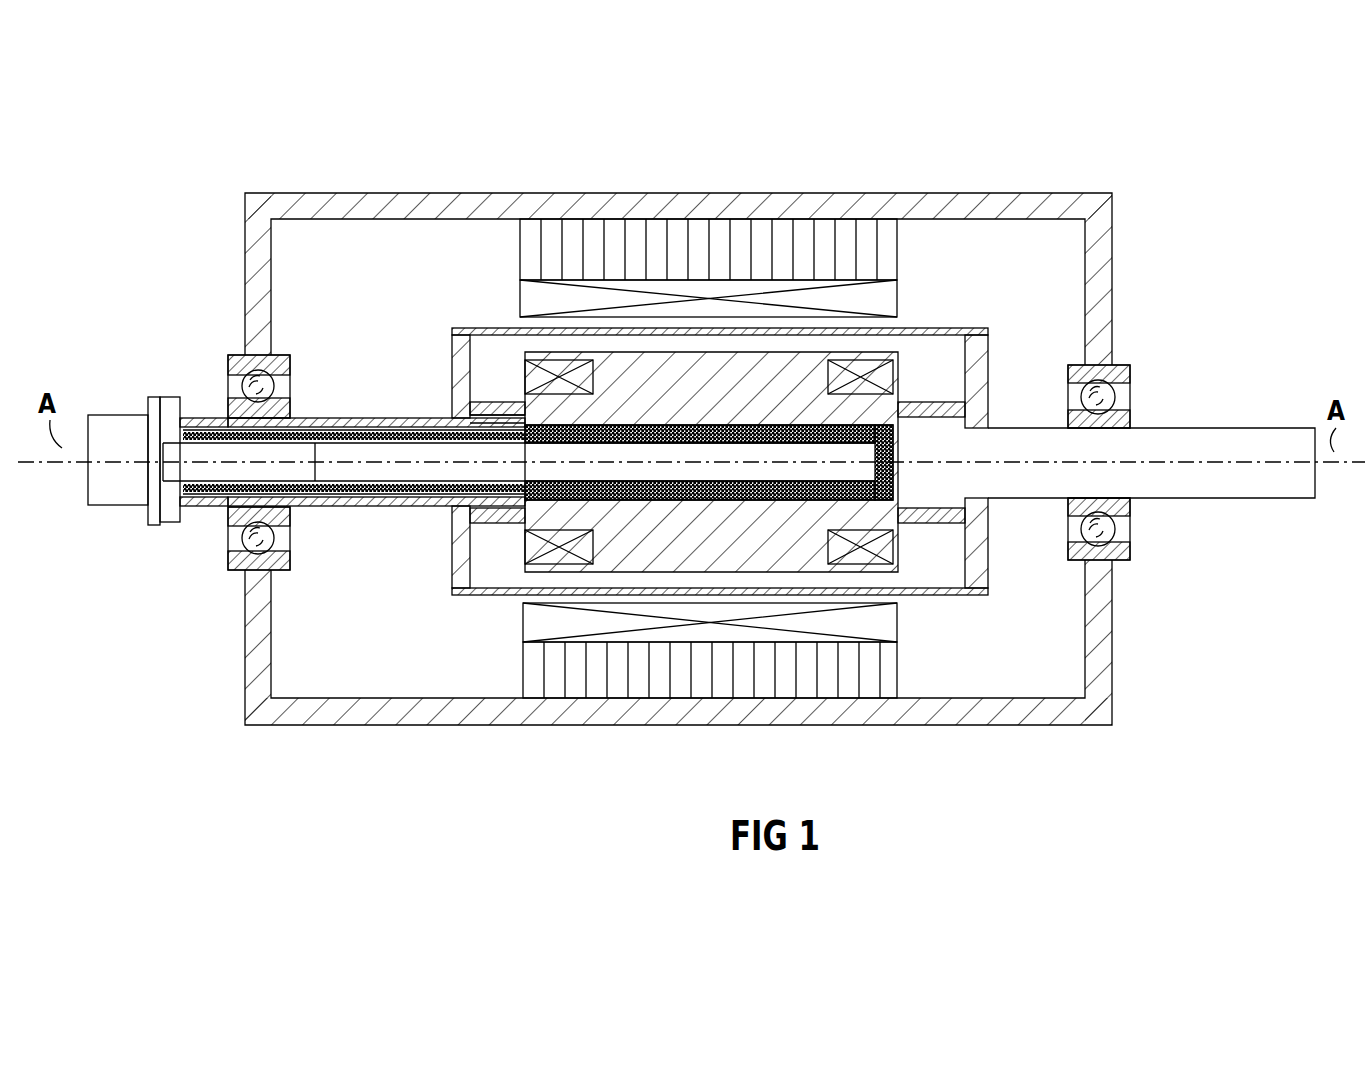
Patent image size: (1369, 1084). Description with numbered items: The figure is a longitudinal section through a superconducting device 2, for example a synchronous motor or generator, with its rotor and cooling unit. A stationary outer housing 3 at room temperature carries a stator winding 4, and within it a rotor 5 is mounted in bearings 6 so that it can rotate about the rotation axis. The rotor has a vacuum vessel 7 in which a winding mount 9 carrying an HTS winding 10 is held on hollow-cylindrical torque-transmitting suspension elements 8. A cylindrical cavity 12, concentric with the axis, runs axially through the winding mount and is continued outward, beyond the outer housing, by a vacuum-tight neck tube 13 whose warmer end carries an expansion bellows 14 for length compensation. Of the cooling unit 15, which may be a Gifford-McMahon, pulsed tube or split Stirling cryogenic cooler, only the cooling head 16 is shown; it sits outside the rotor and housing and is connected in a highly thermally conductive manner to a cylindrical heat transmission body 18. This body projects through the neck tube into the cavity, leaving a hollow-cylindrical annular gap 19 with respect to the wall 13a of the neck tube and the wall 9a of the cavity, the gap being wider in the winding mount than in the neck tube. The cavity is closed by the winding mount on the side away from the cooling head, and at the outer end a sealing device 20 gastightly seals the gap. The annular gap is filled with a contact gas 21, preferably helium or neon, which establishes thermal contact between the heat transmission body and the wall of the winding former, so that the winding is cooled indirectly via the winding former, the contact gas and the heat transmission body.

The superconducting device 2 is at (692, 781).
The outer housing 3 is at (1097, 280).
The stator winding 4 is at (815, 300).
The rotor 5 is at (447, 381).
The bearings 6 is at (228, 356).
The vacuum vessel 7 is at (922, 328).
The torque-transmitting suspension elements 8 is at (500, 533).
The winding mount 9 is at (610, 554).
The wall of the cavity 9a is at (884, 431).
The HTS winding 10 is at (555, 362).
The cylindrical cavity 12 is at (375, 492).
The neck tube 13 is at (330, 490).
The wall of the neck tube 13a is at (362, 442).
The expansion bellows 14 is at (197, 423).
The cooling unit 15 is at (118, 460).
The cooling head 16 is at (102, 423).
The heat transmission body 18 is at (727, 455).
The annular gap 19 is at (500, 438).
The sealing device 20 is at (172, 522).
The contact gas 21 is at (338, 435).